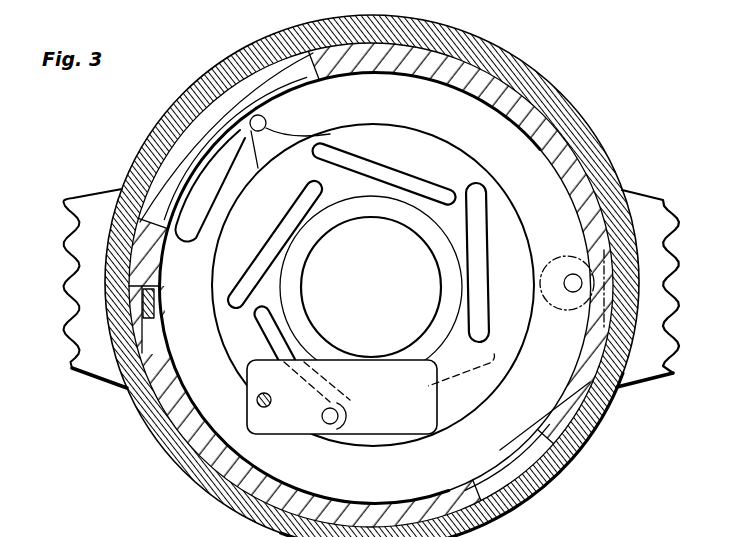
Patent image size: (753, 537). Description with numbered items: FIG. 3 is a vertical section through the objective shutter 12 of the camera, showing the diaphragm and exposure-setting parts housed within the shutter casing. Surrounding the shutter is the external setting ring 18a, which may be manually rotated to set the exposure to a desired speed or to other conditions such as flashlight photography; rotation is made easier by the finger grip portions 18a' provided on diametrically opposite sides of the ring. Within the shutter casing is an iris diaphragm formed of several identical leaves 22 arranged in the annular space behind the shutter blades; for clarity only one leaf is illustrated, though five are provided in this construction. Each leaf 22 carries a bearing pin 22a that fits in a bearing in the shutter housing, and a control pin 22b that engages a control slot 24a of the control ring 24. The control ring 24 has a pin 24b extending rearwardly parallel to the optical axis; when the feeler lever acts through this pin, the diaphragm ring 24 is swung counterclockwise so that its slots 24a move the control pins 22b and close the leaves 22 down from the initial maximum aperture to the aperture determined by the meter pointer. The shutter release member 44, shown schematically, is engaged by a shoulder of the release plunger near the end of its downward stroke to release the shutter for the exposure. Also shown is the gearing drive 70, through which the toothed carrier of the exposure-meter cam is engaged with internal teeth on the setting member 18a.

The objective shutter 12 is at (423, 68).
The external setting ring 18a is at (372, 276).
The finger grip portions 18a' is at (372, 284).
The diaphragm leaves 22 is at (360, 372).
The bearing pin 22a is at (264, 410).
The control pin 22b is at (326, 424).
The control ring 24 is at (402, 447).
The control slot 24a is at (252, 284).
The pin 24b is at (265, 121).
The shutter release member 44 is at (155, 301).
The gearing drive 70 is at (562, 262).